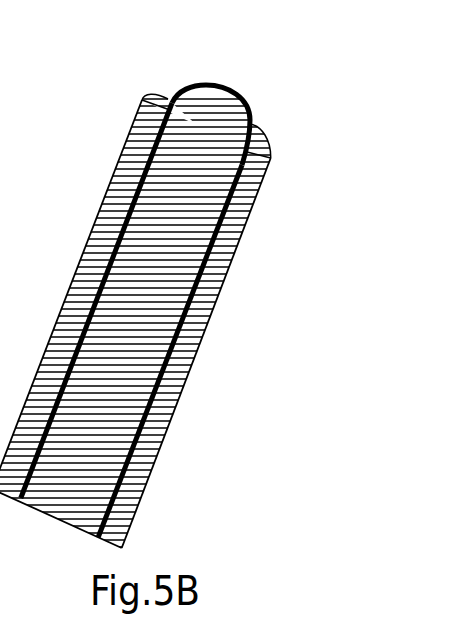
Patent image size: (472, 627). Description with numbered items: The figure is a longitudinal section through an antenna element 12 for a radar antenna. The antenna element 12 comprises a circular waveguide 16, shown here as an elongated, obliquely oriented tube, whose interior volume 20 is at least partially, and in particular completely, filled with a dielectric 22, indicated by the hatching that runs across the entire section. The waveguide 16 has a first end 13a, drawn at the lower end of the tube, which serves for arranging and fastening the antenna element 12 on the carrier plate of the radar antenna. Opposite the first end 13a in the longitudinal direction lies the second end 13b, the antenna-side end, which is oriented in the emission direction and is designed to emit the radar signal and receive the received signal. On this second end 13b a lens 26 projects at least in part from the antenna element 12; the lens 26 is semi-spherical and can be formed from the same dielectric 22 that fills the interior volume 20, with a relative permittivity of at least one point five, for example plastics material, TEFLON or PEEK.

The antenna element 12 is at (287, 161).
The first end 13a is at (168, 525).
The second end 13b is at (126, 114).
The circular waveguide 16 is at (155, 439).
The interior volume 20 is at (181, 351).
The dielectric 22 is at (183, 260).
The lens 26 is at (206, 84).